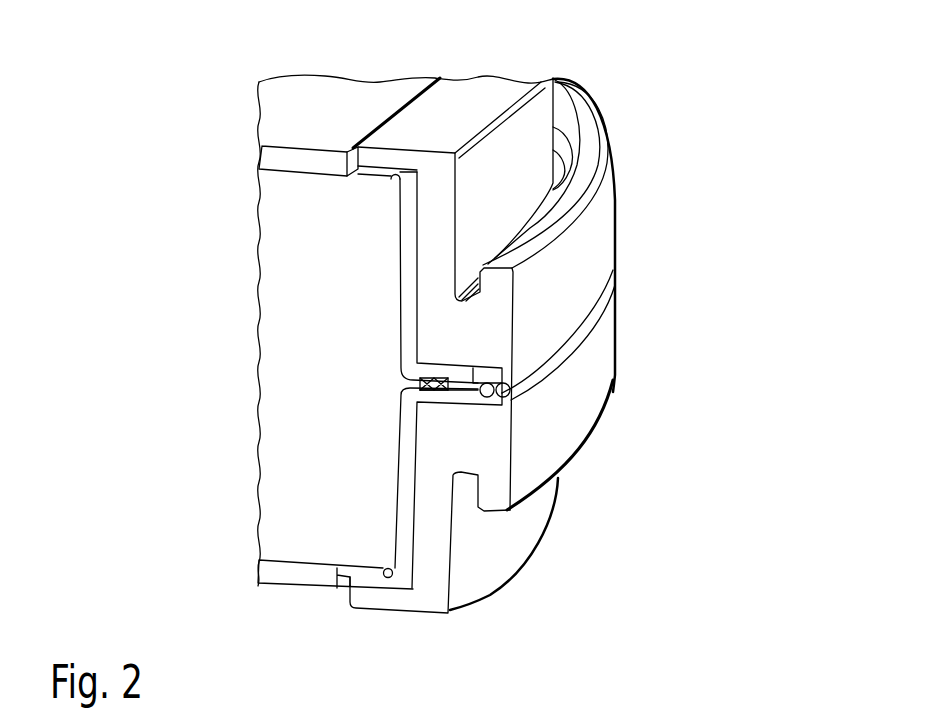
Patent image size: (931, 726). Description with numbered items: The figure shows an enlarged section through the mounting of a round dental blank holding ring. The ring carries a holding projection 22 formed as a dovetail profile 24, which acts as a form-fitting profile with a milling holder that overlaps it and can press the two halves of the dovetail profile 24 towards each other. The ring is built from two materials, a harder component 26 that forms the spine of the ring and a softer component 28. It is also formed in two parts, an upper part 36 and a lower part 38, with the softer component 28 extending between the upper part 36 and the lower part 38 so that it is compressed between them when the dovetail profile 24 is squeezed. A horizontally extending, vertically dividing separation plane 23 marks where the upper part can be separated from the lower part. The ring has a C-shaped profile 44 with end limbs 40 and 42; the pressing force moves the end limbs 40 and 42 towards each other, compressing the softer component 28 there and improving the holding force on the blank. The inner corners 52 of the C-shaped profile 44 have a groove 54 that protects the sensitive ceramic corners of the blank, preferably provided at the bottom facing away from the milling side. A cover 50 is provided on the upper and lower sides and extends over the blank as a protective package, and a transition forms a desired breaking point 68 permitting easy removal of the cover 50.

The holding projection 22 is at (687, 56).
The separation plane 23 is at (625, 289).
The dovetail profile 24 is at (590, 393).
The harder component 26 is at (414, 433).
The softer component 28 is at (384, 281).
The upper part 36 is at (597, 243).
The lower part 38 is at (563, 438).
The end limb 40 is at (393, 160).
The end limb 42 is at (369, 597).
The C-shaped profile 44 is at (316, 469).
The cover 50 is at (290, 97).
The inner corner 52 is at (385, 202).
The groove 54 is at (402, 172).
The desired breaking point 68 is at (325, 592).